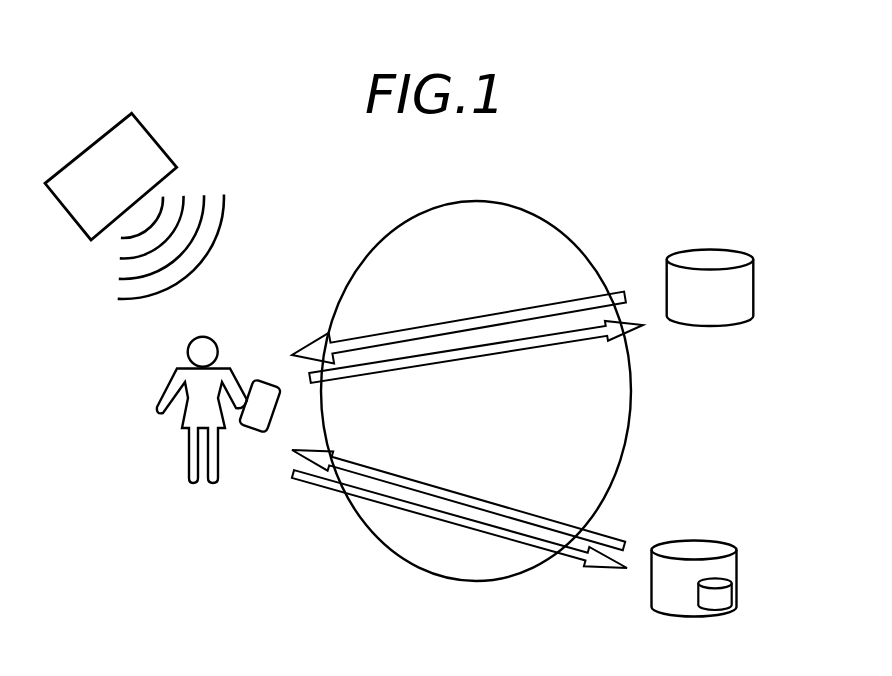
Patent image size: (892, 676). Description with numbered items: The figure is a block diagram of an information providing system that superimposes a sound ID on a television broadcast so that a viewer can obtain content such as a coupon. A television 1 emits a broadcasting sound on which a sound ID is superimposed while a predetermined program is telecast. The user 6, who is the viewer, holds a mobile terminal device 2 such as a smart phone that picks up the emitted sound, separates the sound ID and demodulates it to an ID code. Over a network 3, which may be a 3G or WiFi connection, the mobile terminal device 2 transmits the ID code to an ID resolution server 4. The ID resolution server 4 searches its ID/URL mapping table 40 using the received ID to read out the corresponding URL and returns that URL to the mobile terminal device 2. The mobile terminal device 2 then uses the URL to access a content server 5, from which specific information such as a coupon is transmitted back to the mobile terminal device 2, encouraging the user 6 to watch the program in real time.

The television 1 is at (142, 123).
The mobile terminal device 2 is at (262, 435).
The network 3 is at (570, 238).
The ID resolution server 4 is at (737, 550).
The ID/URL mapping table 40 is at (732, 601).
The content server 5 is at (753, 257).
The user 6 is at (173, 376).